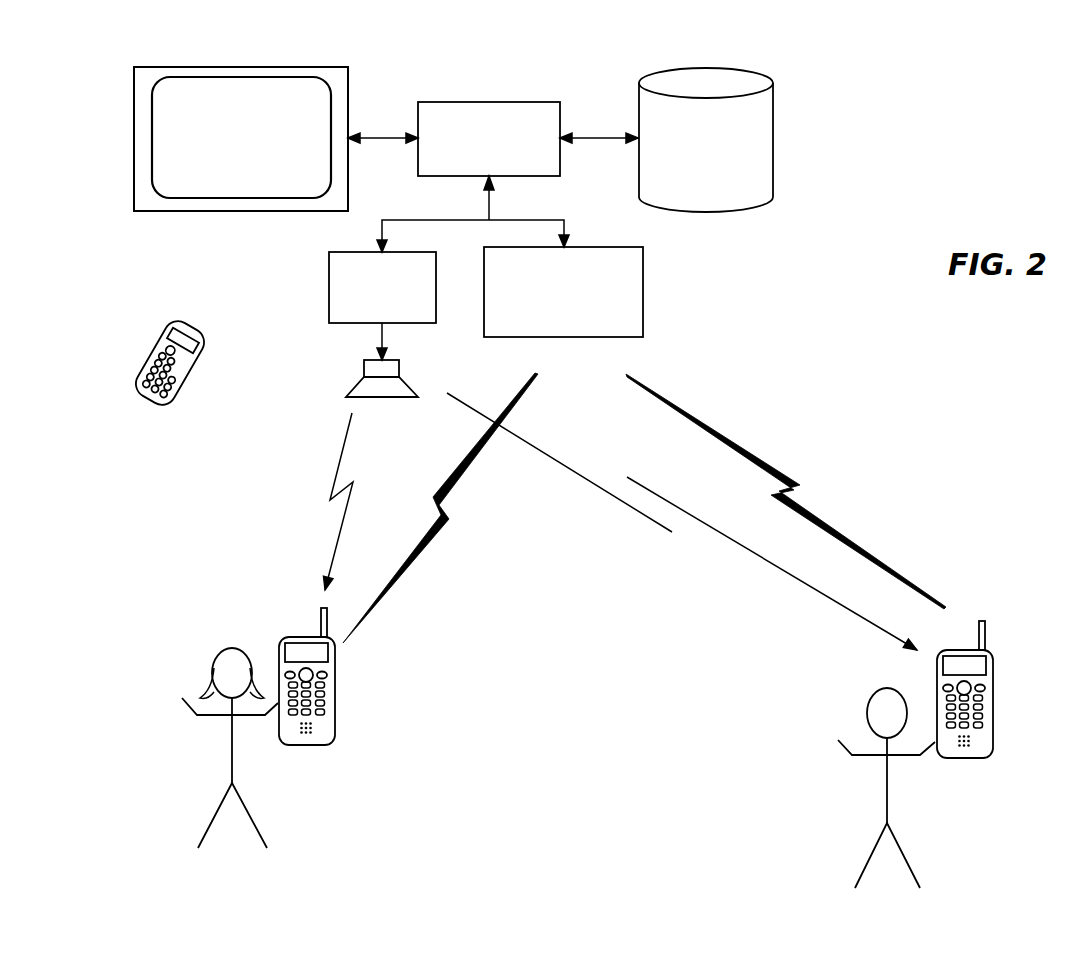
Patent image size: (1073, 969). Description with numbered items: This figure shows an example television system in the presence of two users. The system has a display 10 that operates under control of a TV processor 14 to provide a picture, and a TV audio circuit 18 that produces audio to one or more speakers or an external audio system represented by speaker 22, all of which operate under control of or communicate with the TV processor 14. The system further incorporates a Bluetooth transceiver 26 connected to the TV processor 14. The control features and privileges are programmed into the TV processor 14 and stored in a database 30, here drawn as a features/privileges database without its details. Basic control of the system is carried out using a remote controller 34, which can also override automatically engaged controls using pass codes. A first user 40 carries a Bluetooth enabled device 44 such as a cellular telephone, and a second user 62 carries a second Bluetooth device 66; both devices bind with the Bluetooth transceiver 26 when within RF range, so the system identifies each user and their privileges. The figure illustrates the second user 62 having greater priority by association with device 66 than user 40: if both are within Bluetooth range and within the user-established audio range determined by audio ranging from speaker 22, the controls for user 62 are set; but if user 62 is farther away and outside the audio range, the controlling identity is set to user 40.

The display 10 is at (238, 67).
The TV processor 14 is at (488, 102).
The TV audio circuit 18 is at (328, 288).
The speaker 22 is at (408, 383).
The Bluetooth transceiver 26 is at (643, 292).
The database 30 is at (707, 68).
The remote controller 34 is at (148, 352).
The user 40 is at (232, 648).
The Bluetooth enabled device 44 is at (335, 690).
The second user 62 is at (887, 690).
The Bluetooth device 66 is at (992, 703).